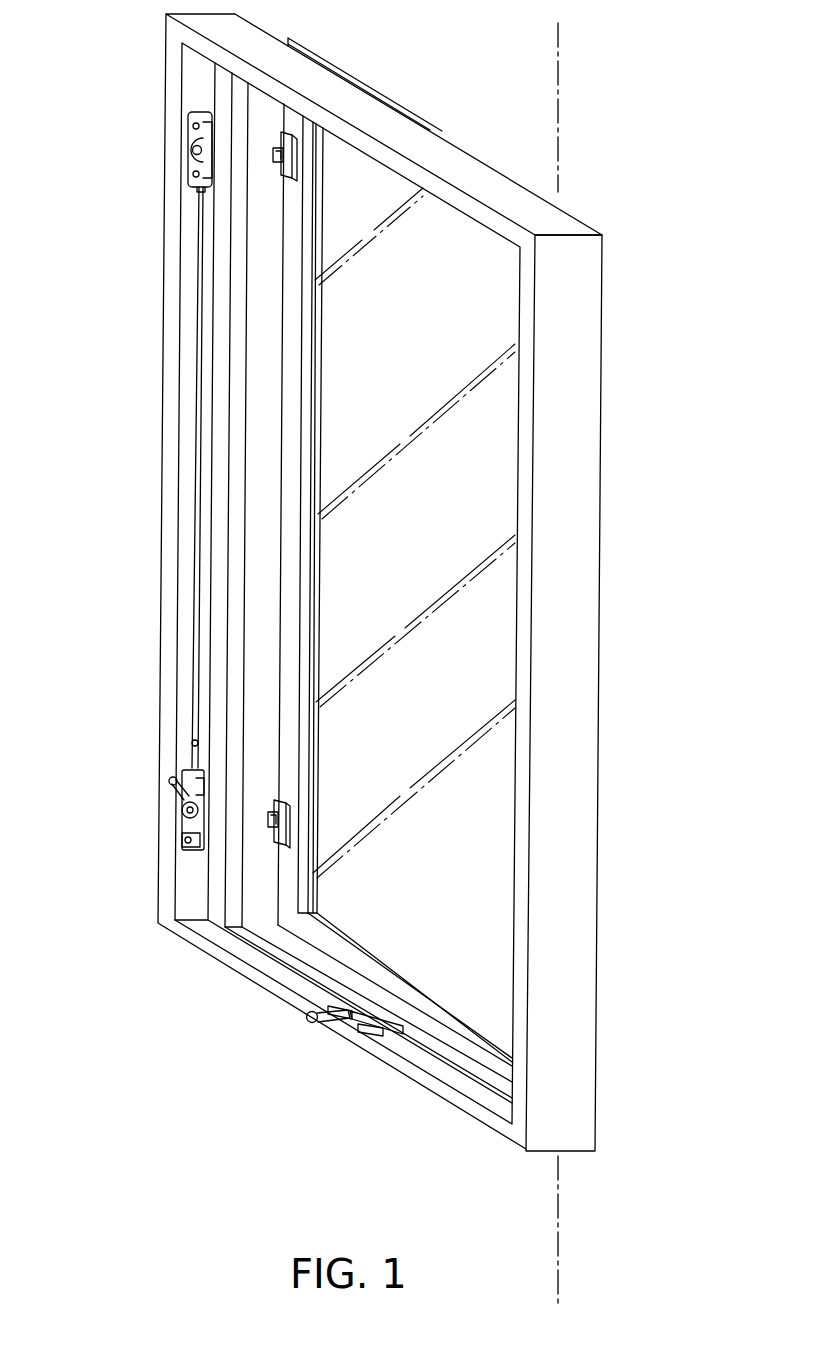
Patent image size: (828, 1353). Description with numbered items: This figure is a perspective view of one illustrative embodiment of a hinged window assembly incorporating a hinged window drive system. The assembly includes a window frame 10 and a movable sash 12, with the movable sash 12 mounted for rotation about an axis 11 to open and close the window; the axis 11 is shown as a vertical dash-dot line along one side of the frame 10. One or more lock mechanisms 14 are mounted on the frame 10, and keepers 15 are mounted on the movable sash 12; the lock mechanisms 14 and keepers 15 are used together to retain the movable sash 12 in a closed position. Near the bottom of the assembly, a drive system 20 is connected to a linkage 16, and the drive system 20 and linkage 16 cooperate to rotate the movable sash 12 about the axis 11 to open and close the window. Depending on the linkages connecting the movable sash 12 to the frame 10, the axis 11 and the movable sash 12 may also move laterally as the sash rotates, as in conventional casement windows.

The window frame 10 is at (588, 503).
The axis 11 is at (558, 95).
The movable sash 12 is at (346, 64).
The lock mechanism 14 is at (188, 168).
The keeper 15 is at (278, 165).
The linkage 16 is at (404, 1030).
The drive system 20 is at (307, 1018).